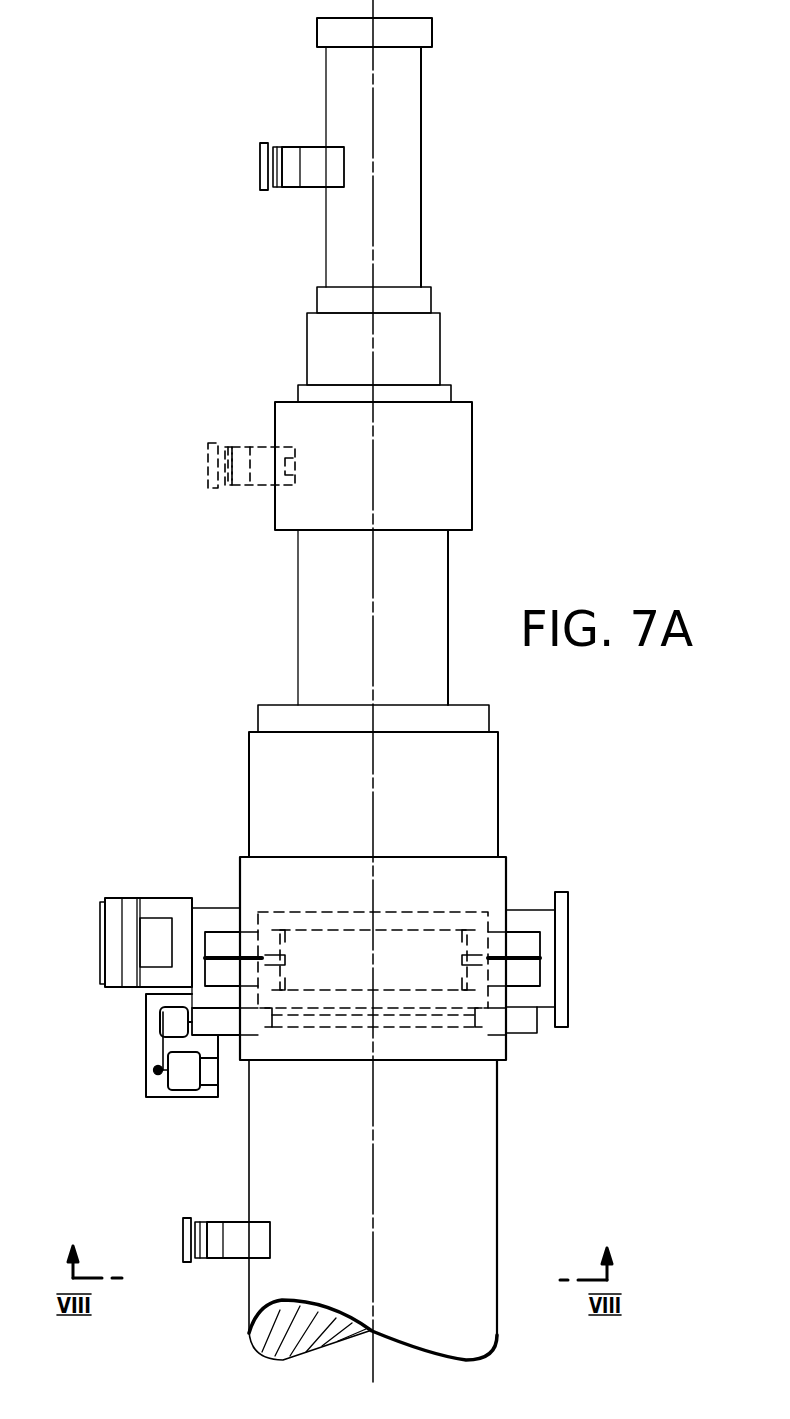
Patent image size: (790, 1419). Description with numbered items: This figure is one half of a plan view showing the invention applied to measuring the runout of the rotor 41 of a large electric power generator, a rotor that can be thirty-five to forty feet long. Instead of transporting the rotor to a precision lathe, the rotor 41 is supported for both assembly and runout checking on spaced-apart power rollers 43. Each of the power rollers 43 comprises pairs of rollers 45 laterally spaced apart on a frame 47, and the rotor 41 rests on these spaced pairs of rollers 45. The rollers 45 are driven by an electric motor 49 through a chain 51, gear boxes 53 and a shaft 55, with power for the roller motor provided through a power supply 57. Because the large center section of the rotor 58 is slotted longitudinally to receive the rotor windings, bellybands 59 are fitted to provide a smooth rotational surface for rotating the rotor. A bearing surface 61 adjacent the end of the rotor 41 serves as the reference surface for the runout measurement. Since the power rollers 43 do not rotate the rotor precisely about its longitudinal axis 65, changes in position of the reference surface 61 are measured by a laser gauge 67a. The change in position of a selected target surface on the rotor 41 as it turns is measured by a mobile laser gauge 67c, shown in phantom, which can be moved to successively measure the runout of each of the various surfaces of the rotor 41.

The rotor 41 is at (559, 1160).
The power rollers 43 is at (598, 905).
The rollers 45 is at (207, 975).
The frame 47 is at (518, 910).
The electric motor 49 is at (187, 1080).
The chain 51 is at (147, 1055).
The gear boxes 53 is at (160, 1013).
The shaft 55 is at (345, 1023).
The power supply 57 is at (130, 905).
The center section of the rotor 58 is at (302, 1163).
The bellybands 59 is at (402, 1042).
The bearing surface 61 is at (421, 210).
The longitudinal axis 65 is at (374, 1358).
The laser gauge 67a is at (295, 147).
The mobile laser gauge 67c is at (231, 447).